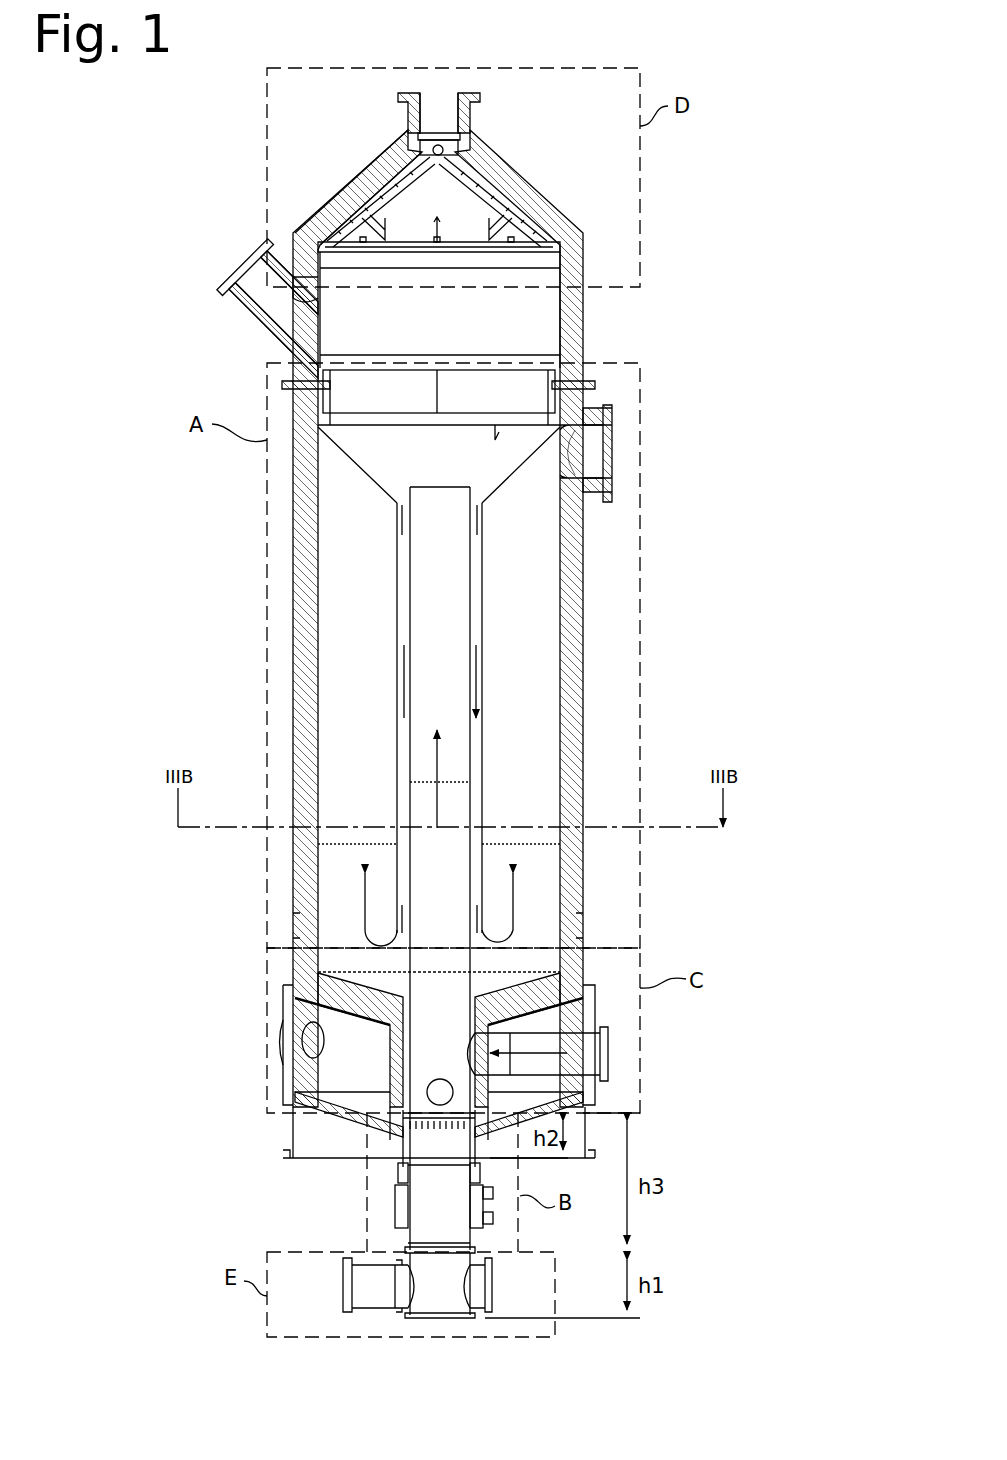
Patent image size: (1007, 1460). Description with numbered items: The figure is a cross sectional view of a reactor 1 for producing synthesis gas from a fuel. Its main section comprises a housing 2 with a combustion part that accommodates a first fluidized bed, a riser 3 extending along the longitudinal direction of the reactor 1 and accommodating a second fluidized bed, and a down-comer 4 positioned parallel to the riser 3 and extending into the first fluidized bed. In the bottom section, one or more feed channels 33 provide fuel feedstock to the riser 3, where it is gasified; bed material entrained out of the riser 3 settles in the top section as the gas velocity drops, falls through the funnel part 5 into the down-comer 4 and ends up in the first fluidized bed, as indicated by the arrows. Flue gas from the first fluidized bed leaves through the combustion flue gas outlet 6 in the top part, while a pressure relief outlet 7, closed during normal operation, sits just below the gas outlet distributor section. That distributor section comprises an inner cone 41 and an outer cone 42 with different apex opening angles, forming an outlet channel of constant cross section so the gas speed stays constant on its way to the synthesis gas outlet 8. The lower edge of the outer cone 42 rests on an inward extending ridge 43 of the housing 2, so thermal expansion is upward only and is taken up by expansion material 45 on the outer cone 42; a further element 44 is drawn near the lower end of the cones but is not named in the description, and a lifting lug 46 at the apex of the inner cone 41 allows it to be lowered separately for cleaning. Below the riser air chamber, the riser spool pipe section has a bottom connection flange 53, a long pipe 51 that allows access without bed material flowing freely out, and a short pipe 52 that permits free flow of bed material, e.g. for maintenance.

The reactor 1 is at (706, 304).
The housing 2 is at (577, 730).
The riser 3 is at (470, 635).
The down-comer 4 is at (483, 575).
The funnel part 5 is at (560, 445).
The combustion flue gas outlet 6 is at (585, 462).
The pressure relief outlet 7 is at (260, 278).
The synthesis gas outlet 8 is at (449, 127).
The feed channel 33 is at (585, 1060).
The inner cone 41 is at (472, 217).
The outer cone 42 is at (486, 180).
The inward extending ridge 43 is at (560, 246).
The bracket 44 is at (382, 222).
The expansion material 45 is at (360, 190).
The lifting lug 46 is at (437, 150).
The long pipe 51 is at (358, 1288).
The short pipe 52 is at (472, 1283).
The bottom connection flange 53 is at (436, 1312).